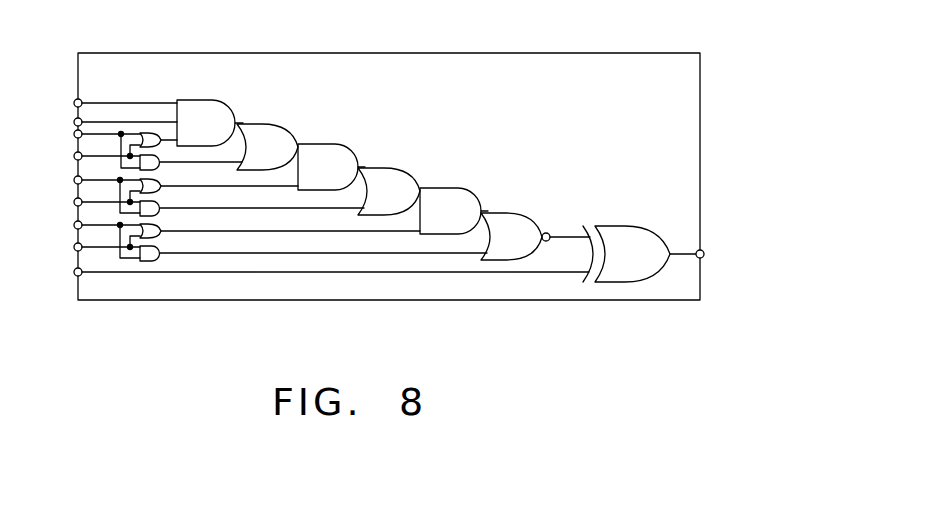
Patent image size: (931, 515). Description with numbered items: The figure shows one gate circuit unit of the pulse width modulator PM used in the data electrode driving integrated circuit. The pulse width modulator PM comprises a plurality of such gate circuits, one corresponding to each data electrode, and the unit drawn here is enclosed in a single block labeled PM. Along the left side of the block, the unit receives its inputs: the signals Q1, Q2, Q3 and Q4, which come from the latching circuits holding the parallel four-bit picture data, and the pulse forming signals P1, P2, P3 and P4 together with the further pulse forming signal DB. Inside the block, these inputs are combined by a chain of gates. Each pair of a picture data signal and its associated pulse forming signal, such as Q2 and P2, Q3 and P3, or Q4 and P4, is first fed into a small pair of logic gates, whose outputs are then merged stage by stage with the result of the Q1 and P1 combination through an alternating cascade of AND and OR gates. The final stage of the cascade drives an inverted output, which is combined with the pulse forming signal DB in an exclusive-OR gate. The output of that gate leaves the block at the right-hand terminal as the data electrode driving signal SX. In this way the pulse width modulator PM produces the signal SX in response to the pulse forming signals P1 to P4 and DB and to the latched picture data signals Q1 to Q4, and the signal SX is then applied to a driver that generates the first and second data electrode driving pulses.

The pulse width modulator PM is at (556, 58).
The signal Q1 is at (108, 103).
The pulse forming signal P1 is at (108, 122).
The signal Q2 is at (90, 145).
The pulse forming signal P2 is at (90, 156).
The signal Q3 is at (90, 190).
The pulse forming signal P3 is at (90, 202).
The signal Q4 is at (90, 235).
The pulse forming signal P4 is at (90, 247).
The pulse forming signal DB is at (314, 272).
The data electrode driving signal Sx SX is at (707, 255).